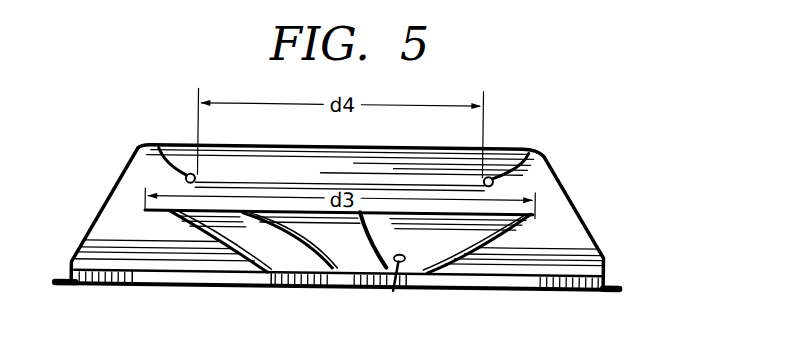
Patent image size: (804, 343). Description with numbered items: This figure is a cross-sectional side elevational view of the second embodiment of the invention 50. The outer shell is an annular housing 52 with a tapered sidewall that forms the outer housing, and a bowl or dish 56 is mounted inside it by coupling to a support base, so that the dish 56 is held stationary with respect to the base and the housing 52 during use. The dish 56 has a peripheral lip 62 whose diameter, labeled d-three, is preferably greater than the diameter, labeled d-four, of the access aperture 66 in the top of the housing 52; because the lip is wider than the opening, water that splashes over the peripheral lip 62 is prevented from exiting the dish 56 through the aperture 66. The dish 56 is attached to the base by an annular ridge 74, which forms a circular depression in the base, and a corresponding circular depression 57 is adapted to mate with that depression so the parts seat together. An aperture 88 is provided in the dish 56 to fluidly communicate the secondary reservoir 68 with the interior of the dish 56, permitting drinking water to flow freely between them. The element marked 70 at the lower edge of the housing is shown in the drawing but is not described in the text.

The second embodiment of the invention 50 is at (549, 122).
The annular housing 52 is at (548, 158).
The dish 56 is at (208, 251).
The circular depression 57 is at (346, 277).
The peripheral lip 62 is at (147, 212).
The access aperture 66 is at (194, 181).
The secondary reservoir 68 is at (543, 240).
The base flange 70 is at (615, 287).
The annular ridge 74 is at (262, 279).
The aperture 88 is at (394, 291).